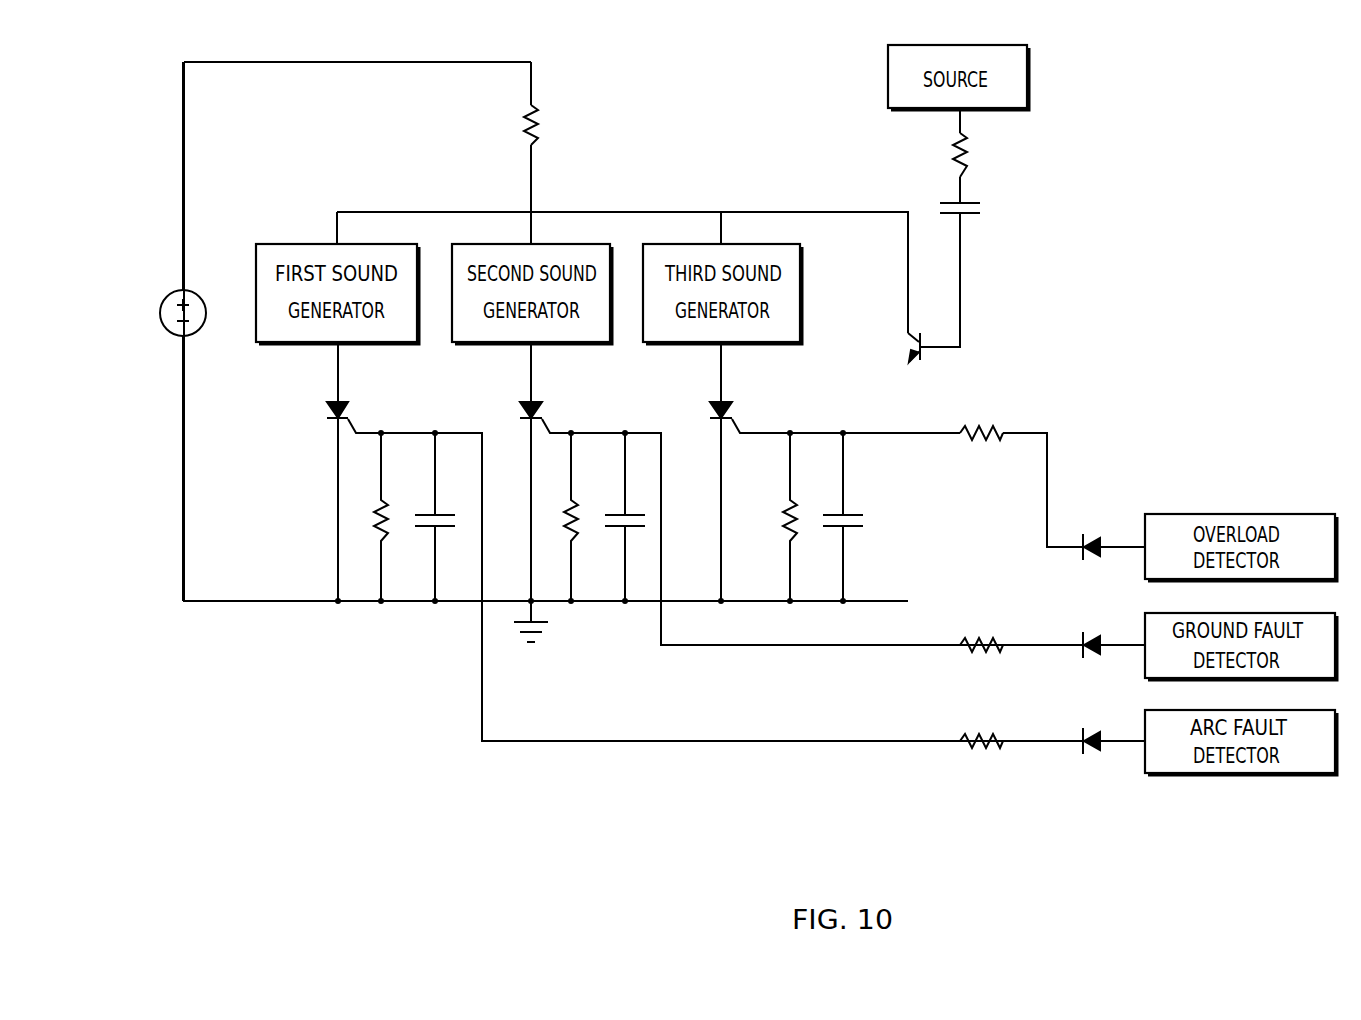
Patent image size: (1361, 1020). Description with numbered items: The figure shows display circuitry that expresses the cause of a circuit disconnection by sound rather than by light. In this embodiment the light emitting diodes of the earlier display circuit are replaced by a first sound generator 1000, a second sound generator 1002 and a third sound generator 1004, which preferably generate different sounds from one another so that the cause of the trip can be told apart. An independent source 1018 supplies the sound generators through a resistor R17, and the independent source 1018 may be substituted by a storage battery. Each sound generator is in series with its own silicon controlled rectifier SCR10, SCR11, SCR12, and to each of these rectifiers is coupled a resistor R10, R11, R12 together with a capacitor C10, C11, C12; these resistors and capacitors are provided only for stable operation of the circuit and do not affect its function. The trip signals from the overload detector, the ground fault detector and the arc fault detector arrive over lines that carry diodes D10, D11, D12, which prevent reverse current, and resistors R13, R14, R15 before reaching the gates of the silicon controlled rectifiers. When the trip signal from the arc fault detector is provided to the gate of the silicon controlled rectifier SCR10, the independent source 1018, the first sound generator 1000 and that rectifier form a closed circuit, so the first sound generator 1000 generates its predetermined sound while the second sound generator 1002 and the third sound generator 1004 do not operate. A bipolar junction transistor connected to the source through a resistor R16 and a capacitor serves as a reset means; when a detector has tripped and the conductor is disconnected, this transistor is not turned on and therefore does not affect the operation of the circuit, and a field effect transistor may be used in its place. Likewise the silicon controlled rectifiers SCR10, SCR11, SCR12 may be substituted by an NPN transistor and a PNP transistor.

The first sound generator 1000 is at (256, 290).
The second sound generator 1002 is at (495, 243).
The third sound generator 1004 is at (686, 243).
The independent source 1018 is at (160, 313).
The resistor R10 is at (402, 517).
The resistor R11 is at (588, 517).
The resistor R12 is at (807, 517).
The resistor R13 is at (981, 451).
The resistor R14 is at (981, 631).
The resistor R15 is at (981, 727).
The resistor R16 is at (975, 173).
The resistor R17 is at (552, 125).
The capacitor C10 is at (444, 517).
The capacitor C11 is at (632, 517).
The capacitor C12 is at (858, 517).
The silicon controlled rectifier SCR10 is at (370, 410).
The silicon controlled rectifier SCR11 is at (563, 410).
The silicon controlled rectifier SCR12 is at (754, 410).
The diode D10 is at (1088, 534).
The diode D11 is at (1088, 631).
The diode D12 is at (1088, 728).